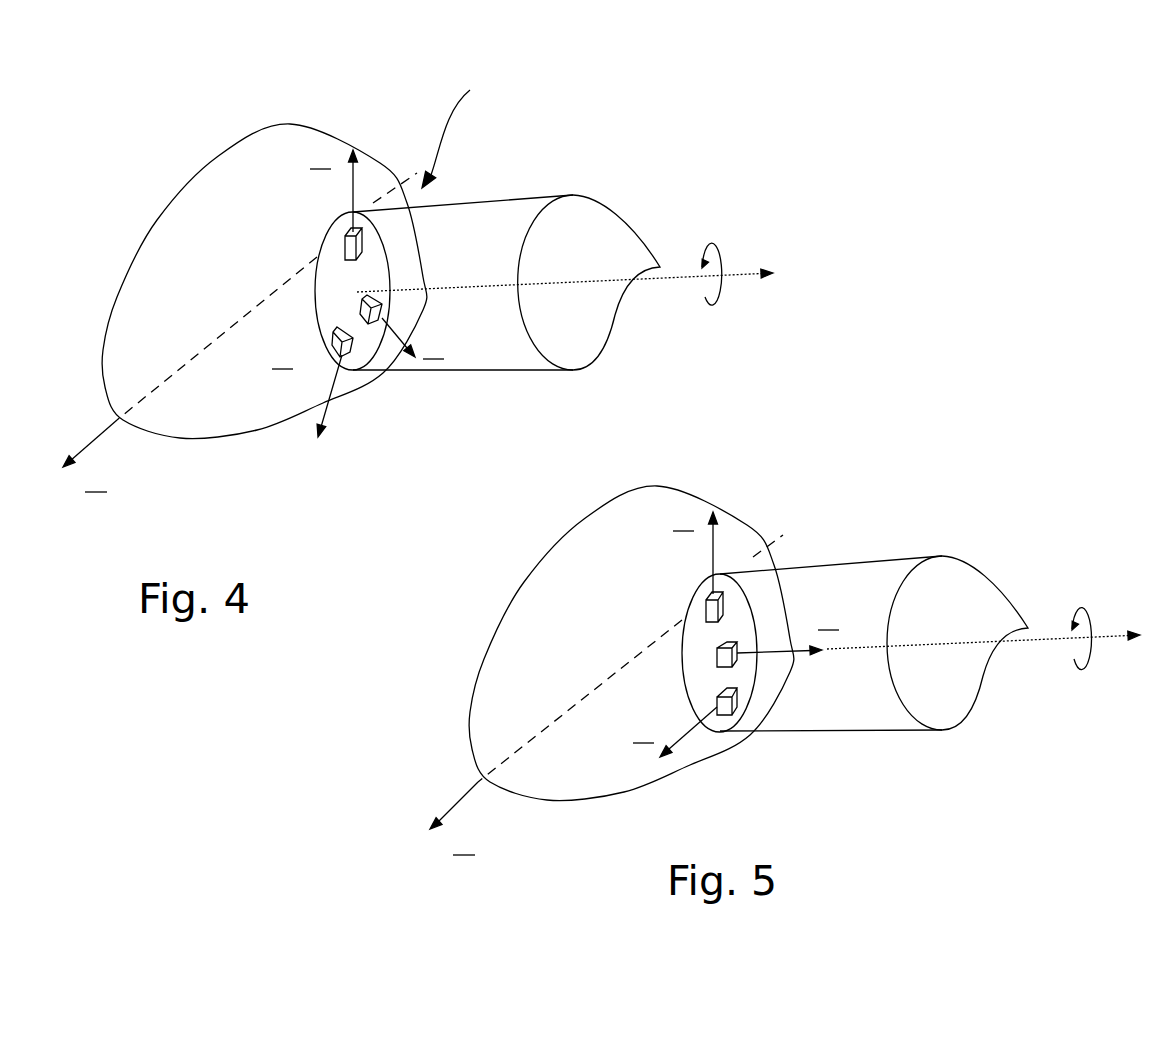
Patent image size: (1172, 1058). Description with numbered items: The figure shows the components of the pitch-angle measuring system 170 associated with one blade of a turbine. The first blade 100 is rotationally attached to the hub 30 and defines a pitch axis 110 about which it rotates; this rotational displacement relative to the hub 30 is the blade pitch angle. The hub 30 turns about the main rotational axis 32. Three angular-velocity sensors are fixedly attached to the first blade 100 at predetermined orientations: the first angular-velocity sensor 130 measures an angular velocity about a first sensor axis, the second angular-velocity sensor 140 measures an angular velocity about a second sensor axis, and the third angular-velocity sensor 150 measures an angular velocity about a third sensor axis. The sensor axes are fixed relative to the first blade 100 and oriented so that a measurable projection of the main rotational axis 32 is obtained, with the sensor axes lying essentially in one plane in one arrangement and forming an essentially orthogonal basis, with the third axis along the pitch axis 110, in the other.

In FIG. 4, the hub 30 is at (217, 157).
In FIG. 5, the hub 30 is at (610, 643).
In FIG. 4, the main rotational axis 32 is at (167, 377).
In FIG. 5, the main rotational axis 32 is at (600, 697).
In FIG. 4, the first blade 100 is at (510, 197).
In FIG. 5, the first blade 100 is at (911, 619).
In FIG. 4, the pitch axis 110 is at (667, 282).
In FIG. 5, the pitch axis 110 is at (1044, 645).
In FIG. 4, the first angular-velocity sensor 130 is at (355, 343).
In FIG. 5, the first angular-velocity sensor 130 is at (719, 746).
In FIG. 4, the second angular-velocity sensor 140 is at (345, 239).
In FIG. 5, the second angular-velocity sensor 140 is at (666, 558).
In FIG. 4, the third angular-velocity sensor 150 is at (378, 297).
In FIG. 5, the third angular-velocity sensor 150 is at (787, 649).
In FIG. 4, the pitch-angle measuring system 170 is at (472, 121).